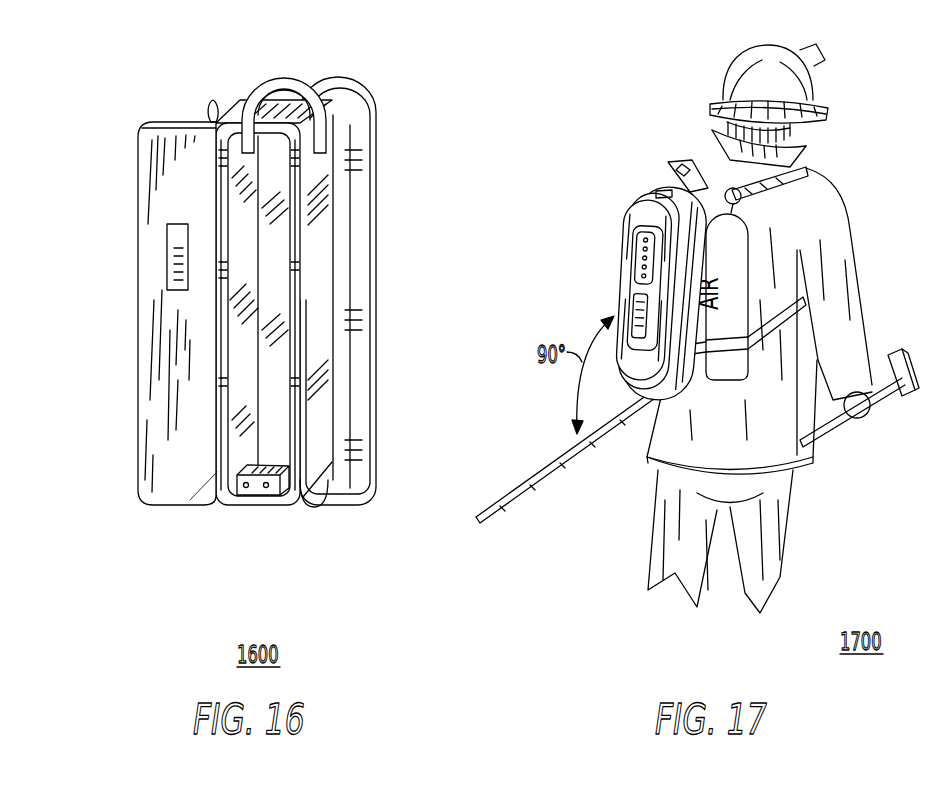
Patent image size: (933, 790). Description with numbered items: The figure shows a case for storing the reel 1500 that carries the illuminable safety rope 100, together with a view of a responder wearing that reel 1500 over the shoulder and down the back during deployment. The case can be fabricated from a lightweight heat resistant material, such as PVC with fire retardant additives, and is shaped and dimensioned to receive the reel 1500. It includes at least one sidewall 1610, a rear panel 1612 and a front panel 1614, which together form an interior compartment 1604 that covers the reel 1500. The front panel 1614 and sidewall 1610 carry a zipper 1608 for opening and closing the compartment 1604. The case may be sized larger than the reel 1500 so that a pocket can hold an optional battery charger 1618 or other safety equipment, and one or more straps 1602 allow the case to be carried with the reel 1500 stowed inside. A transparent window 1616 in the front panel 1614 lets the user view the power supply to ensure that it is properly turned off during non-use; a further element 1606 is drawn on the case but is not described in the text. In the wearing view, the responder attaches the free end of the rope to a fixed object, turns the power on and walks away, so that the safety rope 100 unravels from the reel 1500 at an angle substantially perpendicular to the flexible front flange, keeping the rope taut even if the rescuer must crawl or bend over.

In FIG. 16, the straps 1602 is at (333, 80).
In FIG. 16, the interior compartment 1604 is at (243, 132).
In FIG. 16, the rear panel 1612 is at (272, 147).
In FIG. 16, the front panel 1614 is at (158, 160).
In FIG. 16, the transparent window 1616 is at (167, 292).
In FIG. 16, the zipper 1608 is at (210, 113).
In FIG. 16, the strap 1606 is at (165, 497).
In FIG. 16, the battery charger 1618 is at (257, 497).
In FIG. 16, the sidewall 1610 is at (318, 492).
In FIG. 17, the reel 1500 is at (652, 205).
In FIG. 17, the illuminable safety rope 100 is at (512, 507).